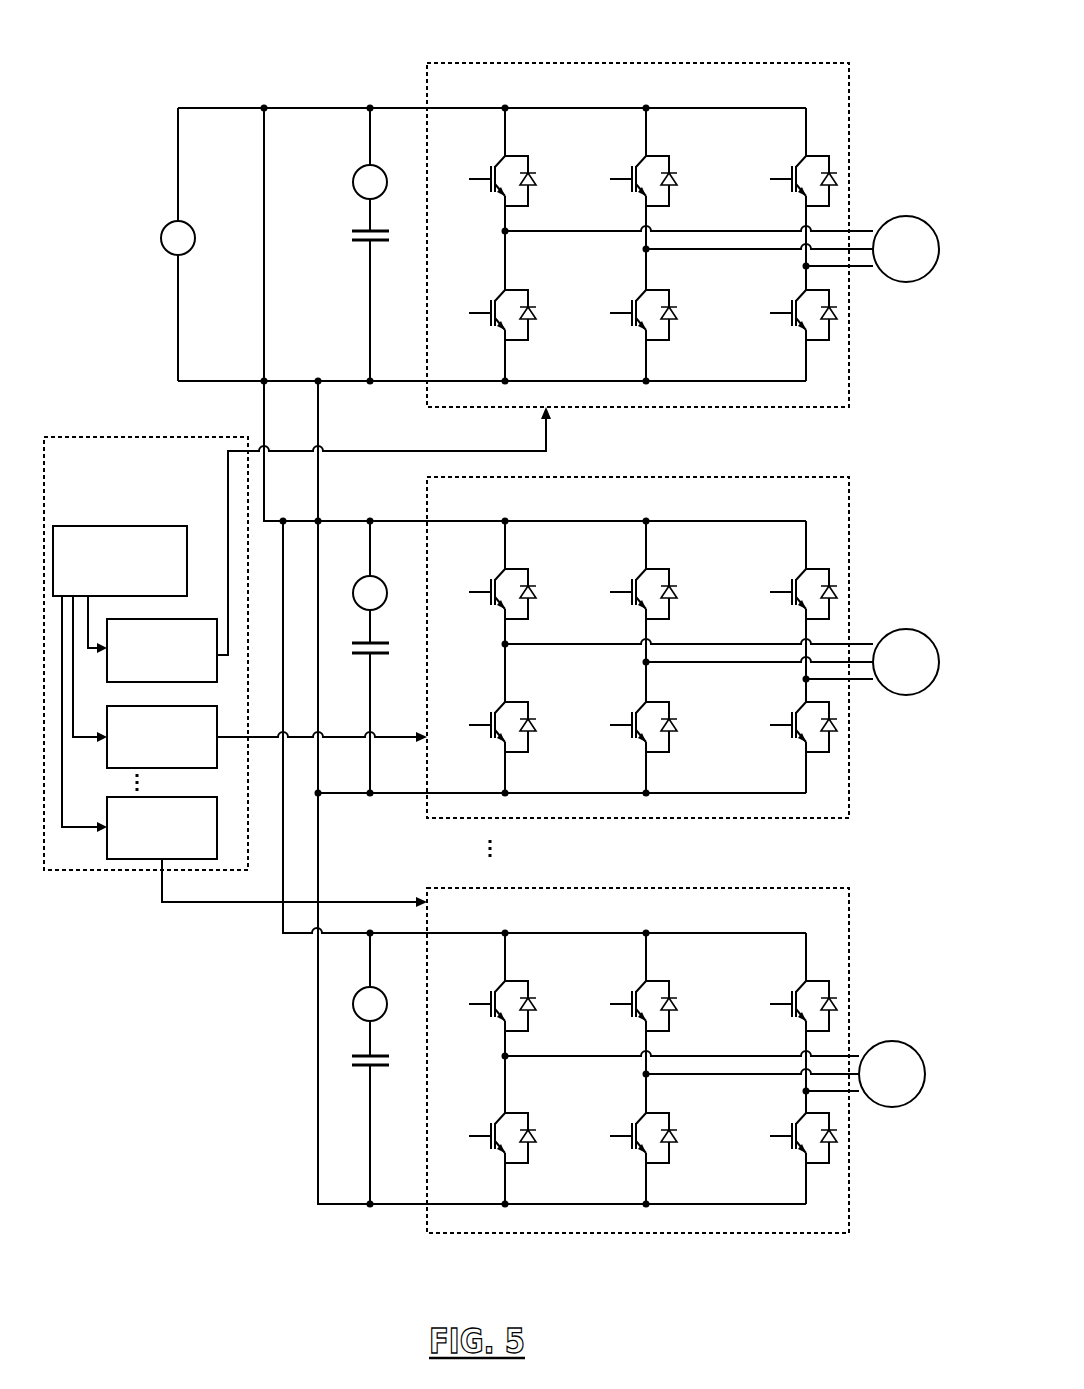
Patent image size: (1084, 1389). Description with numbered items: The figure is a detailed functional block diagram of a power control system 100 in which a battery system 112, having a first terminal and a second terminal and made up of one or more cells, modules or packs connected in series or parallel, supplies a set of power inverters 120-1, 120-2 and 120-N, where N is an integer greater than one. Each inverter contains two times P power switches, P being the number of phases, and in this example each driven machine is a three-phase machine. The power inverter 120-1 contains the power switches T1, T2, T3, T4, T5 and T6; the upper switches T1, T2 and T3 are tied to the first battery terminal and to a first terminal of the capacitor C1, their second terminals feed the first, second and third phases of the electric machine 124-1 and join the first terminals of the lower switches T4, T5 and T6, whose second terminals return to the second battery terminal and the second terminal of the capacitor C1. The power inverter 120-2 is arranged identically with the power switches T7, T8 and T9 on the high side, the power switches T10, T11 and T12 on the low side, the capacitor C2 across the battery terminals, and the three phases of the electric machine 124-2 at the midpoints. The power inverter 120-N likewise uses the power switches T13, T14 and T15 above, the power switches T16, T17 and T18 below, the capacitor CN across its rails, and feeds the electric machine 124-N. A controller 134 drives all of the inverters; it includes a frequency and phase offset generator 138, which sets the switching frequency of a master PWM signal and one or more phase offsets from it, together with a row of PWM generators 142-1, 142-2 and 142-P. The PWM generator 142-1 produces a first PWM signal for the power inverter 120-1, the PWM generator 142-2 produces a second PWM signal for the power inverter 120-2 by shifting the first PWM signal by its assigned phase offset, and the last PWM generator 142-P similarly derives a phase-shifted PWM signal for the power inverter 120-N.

The power control system 100 is at (156, 69).
The battery system 112 is at (164, 227).
The controller 134 is at (152, 437).
The frequency and phase offset generator 138 is at (187, 527).
The PWM generator 142-1 is at (195, 620).
The PWM generator 142-2 is at (175, 706).
The P-th inverter control module 142-P is at (167, 797).
The power inverter 120-1 is at (688, 63).
The power inverter 120-2 is at (688, 477).
The power inverter 120-N is at (688, 888).
The electric machine 124-1 is at (890, 218).
The electric machine 124-2 is at (890, 631).
The electric machine 124-N is at (886, 1041).
The capacitor C1 is at (363, 244).
The capacitor C2 is at (365, 657).
The capacitor CN is at (378, 1068).
The power switch T1 is at (496, 176).
The power switch T2 is at (496, 319).
The power switch T3 is at (637, 176).
The power switch T4 is at (637, 319).
The power switch T5 is at (797, 176).
The power switch T6 is at (797, 319).
The power switch T7 is at (496, 589).
The power switch T8 is at (637, 589).
The power switch T9 is at (797, 589).
The power switch T10 is at (491, 732).
The power switch T11 is at (632, 732).
The power switch T12 is at (792, 732).
The power switch T13 is at (492, 1000).
The power switch T14 is at (633, 1000).
The power switch T15 is at (793, 1000).
The power switch T16 is at (492, 1142).
The power switch T17 is at (633, 1142).
The power switch T18 is at (793, 1142).